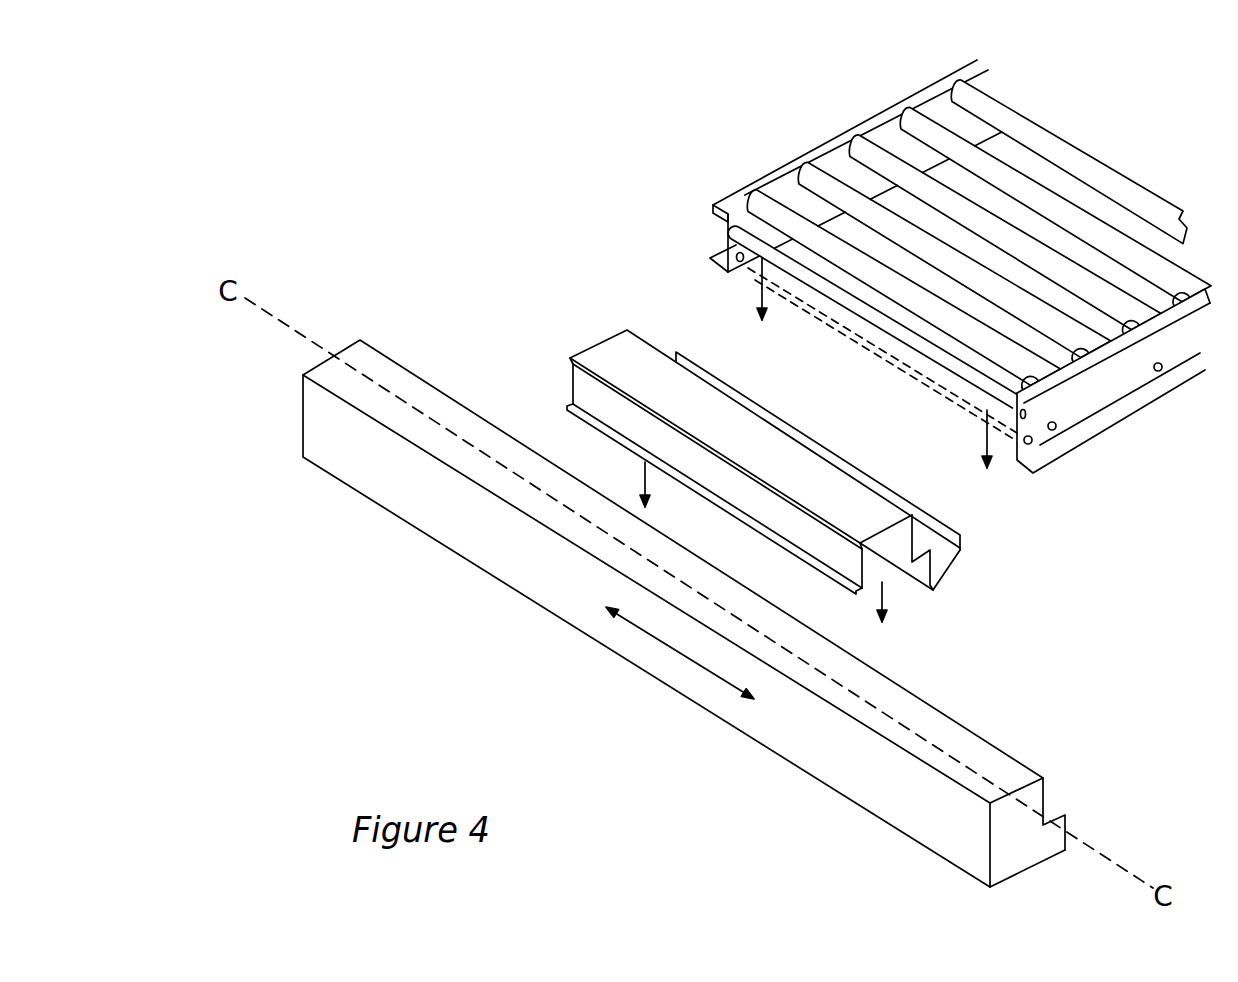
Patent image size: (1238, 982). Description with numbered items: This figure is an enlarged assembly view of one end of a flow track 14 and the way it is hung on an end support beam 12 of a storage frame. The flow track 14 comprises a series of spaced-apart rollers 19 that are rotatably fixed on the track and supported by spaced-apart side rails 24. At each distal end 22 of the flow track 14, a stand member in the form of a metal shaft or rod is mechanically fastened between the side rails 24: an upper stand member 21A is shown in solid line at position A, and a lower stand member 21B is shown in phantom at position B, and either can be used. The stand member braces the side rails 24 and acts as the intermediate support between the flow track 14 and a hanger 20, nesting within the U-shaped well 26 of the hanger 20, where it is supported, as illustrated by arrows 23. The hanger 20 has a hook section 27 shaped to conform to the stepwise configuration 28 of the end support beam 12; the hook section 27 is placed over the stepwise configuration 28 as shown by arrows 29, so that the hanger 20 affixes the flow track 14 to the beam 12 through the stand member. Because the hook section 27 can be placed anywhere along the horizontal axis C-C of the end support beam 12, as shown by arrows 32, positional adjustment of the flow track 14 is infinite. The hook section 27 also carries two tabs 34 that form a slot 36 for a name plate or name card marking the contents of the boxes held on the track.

The end support beam 12 is at (836, 750).
The flow track 14 is at (864, 287).
The rollers 19 is at (972, 92).
The hanger 20 is at (757, 483).
The upper stand member 21A is at (922, 348).
The lower stand member 21B is at (836, 320).
The distal end 22 is at (695, 265).
The arrows 23 is at (762, 290).
The side rails 24 is at (757, 181).
The U-shaped well 26 is at (950, 553).
The hook section 27 is at (617, 357).
The stepwise configuration 28 is at (1066, 800).
The arrows 29 is at (650, 478).
The arrows 32 is at (672, 650).
The tabs 34 is at (803, 505).
The slot 36 is at (593, 400).
The upper stand member position A is at (1024, 417).
The lower stand member position B is at (1040, 447).